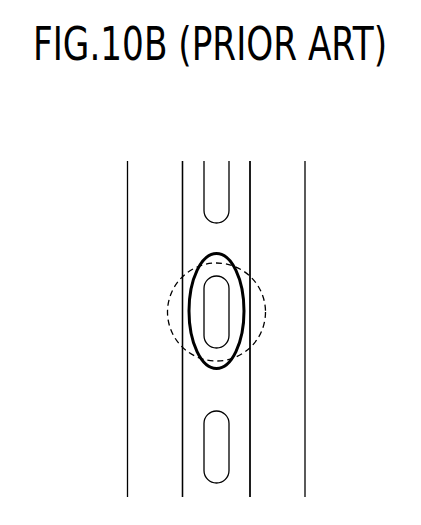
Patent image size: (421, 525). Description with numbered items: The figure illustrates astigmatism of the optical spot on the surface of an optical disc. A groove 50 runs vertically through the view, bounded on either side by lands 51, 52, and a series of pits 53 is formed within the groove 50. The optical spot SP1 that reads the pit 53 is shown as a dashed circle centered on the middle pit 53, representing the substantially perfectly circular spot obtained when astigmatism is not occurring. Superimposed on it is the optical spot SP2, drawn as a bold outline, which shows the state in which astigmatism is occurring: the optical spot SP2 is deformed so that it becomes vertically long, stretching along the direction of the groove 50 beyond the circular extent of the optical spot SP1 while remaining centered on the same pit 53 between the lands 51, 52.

The groove 50 is at (212, 391).
The land 51 is at (147, 233).
The land 52 is at (290, 247).
The pit 53 is at (229, 193).
The optical spot SP1 is at (166, 312).
The optical spot SP2 is at (245, 331).